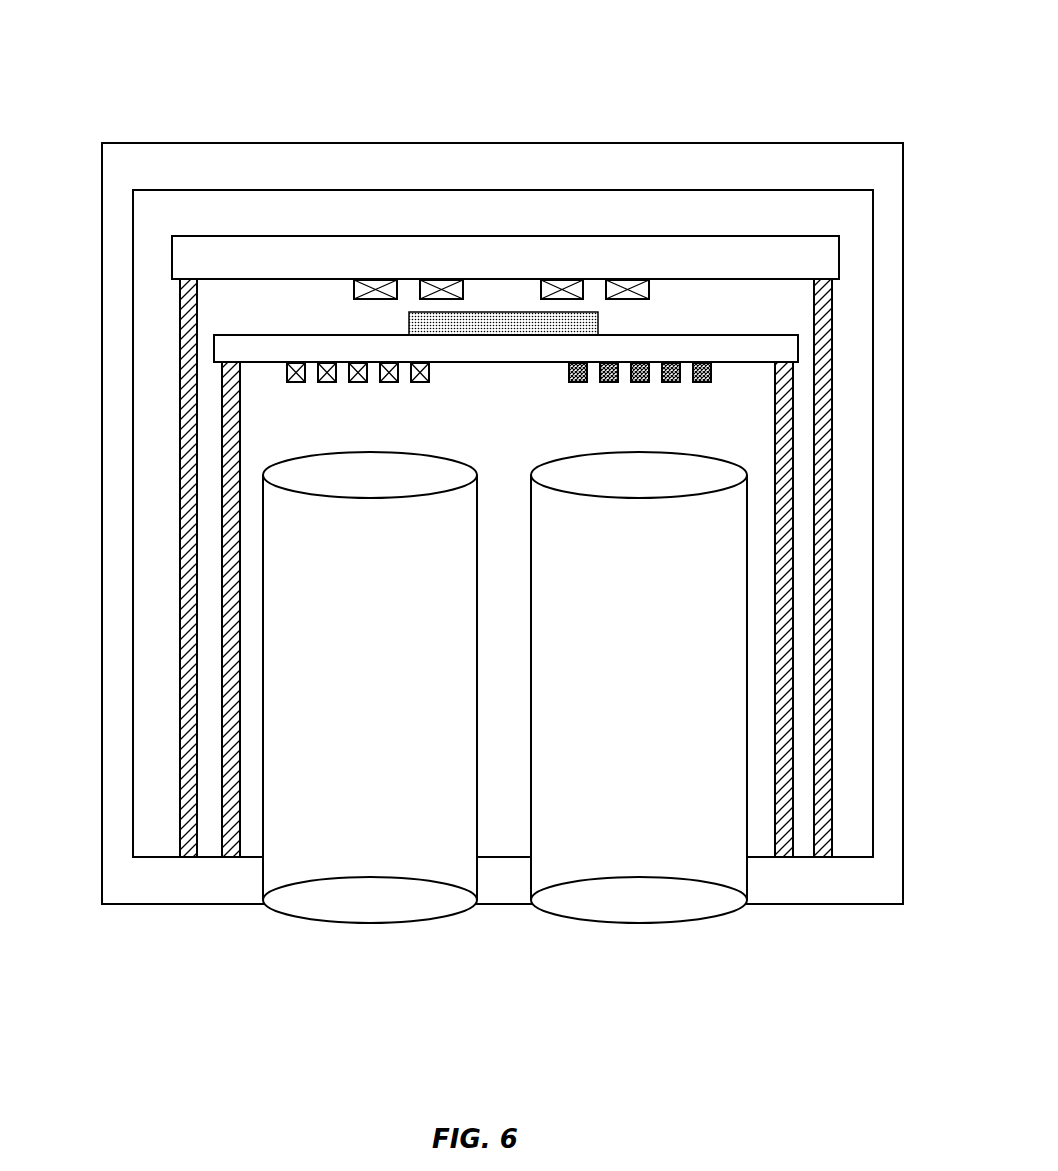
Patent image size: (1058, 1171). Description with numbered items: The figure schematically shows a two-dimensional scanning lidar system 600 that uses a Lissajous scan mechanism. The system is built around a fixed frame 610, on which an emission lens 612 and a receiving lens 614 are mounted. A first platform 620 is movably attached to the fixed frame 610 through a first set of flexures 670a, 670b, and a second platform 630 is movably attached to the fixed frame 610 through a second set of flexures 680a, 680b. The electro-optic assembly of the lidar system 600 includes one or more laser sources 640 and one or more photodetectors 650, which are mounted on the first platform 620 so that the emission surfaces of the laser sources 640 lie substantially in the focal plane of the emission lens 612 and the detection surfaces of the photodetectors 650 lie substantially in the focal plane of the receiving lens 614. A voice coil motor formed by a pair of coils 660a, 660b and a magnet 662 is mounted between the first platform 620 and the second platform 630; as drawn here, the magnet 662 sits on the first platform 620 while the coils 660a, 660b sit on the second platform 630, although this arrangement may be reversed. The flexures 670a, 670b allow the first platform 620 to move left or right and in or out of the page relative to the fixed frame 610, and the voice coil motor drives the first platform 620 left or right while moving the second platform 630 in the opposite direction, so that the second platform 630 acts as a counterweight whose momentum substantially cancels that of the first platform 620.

The two-dimensional scanning lidar system 600 is at (199, 30).
The fixed frame 610 is at (216, 172).
The emission lens 612 is at (355, 907).
The receiving lens 614 is at (638, 900).
The first platform 620 is at (750, 347).
The second platform 630 is at (313, 262).
The laser sources 640 is at (298, 374).
The photodetectors 650 is at (570, 380).
The coil 660a is at (407, 290).
The coil 660b is at (597, 290).
The magnet 662 is at (517, 318).
The flexure 670a is at (232, 668).
The flexure 670b is at (783, 632).
The flexure 680a is at (193, 777).
The flexure 680b is at (820, 782).